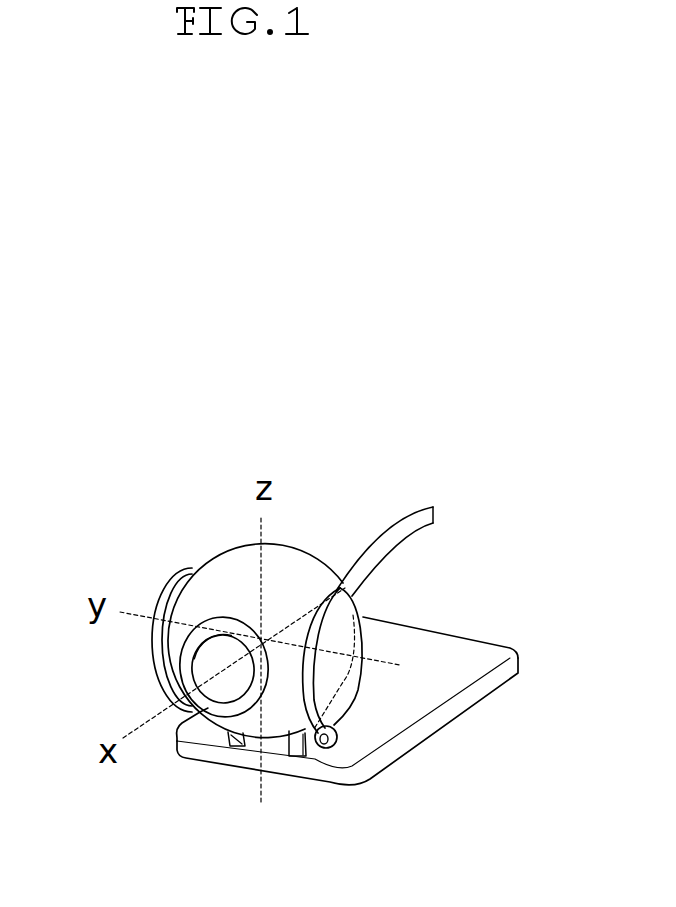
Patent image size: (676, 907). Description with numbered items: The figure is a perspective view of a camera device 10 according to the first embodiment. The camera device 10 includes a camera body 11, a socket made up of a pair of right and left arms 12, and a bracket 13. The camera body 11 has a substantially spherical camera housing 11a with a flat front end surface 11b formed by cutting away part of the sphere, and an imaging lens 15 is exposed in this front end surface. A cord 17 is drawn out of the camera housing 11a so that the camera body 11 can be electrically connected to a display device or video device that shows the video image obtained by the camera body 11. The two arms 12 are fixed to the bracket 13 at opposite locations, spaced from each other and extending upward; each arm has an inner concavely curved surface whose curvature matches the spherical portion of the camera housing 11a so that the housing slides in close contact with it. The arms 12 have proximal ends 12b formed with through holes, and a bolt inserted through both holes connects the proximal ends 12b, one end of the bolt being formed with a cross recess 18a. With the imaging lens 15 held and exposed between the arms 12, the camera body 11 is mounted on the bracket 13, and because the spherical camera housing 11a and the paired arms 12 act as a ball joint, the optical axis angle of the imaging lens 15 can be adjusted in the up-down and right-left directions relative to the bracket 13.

The camera device 10 is at (316, 498).
The camera body 11 is at (227, 584).
The camera housing 11a is at (220, 580).
The front end surface 11b is at (182, 668).
The arms 12 is at (178, 589).
The proximal ends 12b is at (301, 758).
The bracket 13 is at (440, 645).
The imaging lens 15 is at (205, 711).
The cord 17 is at (406, 521).
The cross recess 18a is at (337, 727).